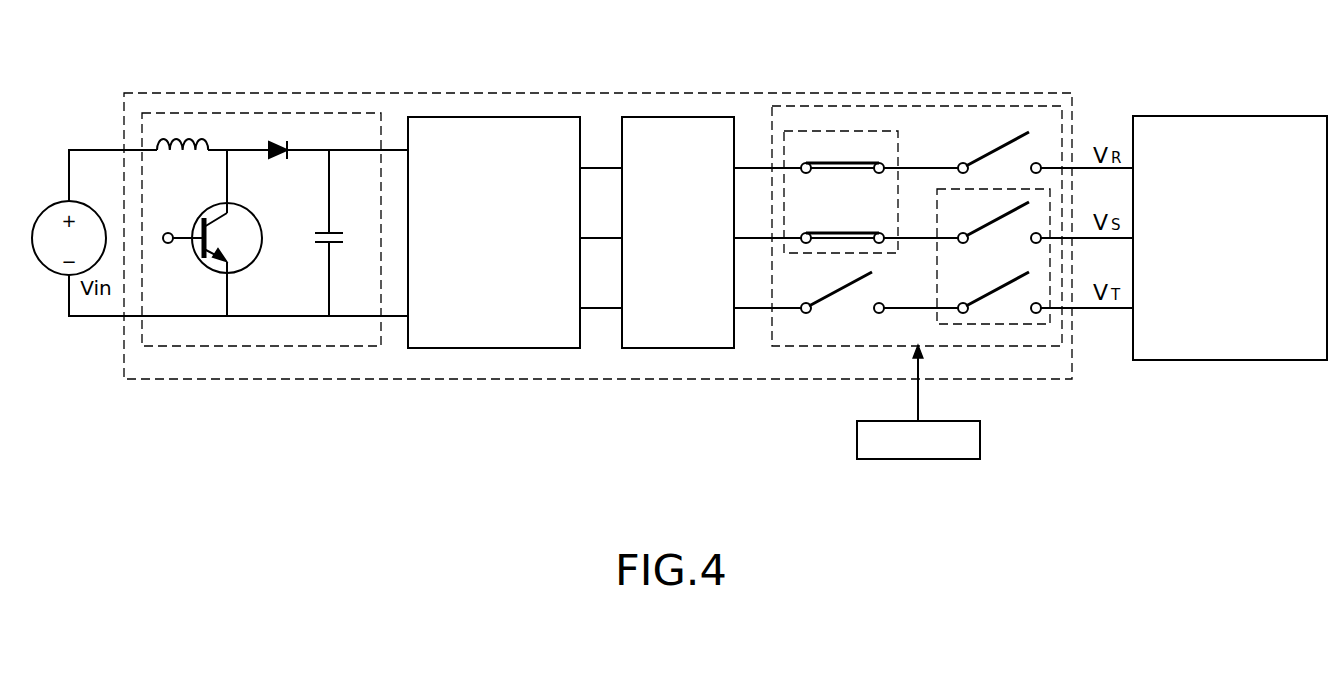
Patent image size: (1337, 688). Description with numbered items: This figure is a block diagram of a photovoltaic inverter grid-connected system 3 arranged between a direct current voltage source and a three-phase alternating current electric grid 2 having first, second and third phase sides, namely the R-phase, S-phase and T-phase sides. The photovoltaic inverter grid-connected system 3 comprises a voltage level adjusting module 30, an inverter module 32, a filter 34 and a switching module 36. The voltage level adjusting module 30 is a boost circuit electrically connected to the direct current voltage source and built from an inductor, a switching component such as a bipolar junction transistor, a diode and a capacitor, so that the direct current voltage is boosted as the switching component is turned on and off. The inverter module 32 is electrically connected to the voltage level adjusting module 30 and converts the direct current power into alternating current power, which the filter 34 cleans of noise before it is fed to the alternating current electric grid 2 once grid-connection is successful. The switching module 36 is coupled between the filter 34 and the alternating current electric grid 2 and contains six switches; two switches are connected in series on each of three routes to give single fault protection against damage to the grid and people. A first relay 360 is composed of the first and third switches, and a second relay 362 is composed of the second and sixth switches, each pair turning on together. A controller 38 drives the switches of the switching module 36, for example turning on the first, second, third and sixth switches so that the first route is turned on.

The alternating current electric grid 2 is at (1203, 133).
The photovoltaic inverter grid-connected system 3 is at (588, 107).
The voltage level adjusting module 30 is at (253, 123).
The inverter module 32 is at (470, 123).
The filter 34 is at (685, 125).
The switching module 36 is at (933, 226).
The first relay 360 is at (806, 118).
The second relay 362 is at (1028, 335).
The controller 38 is at (975, 449).